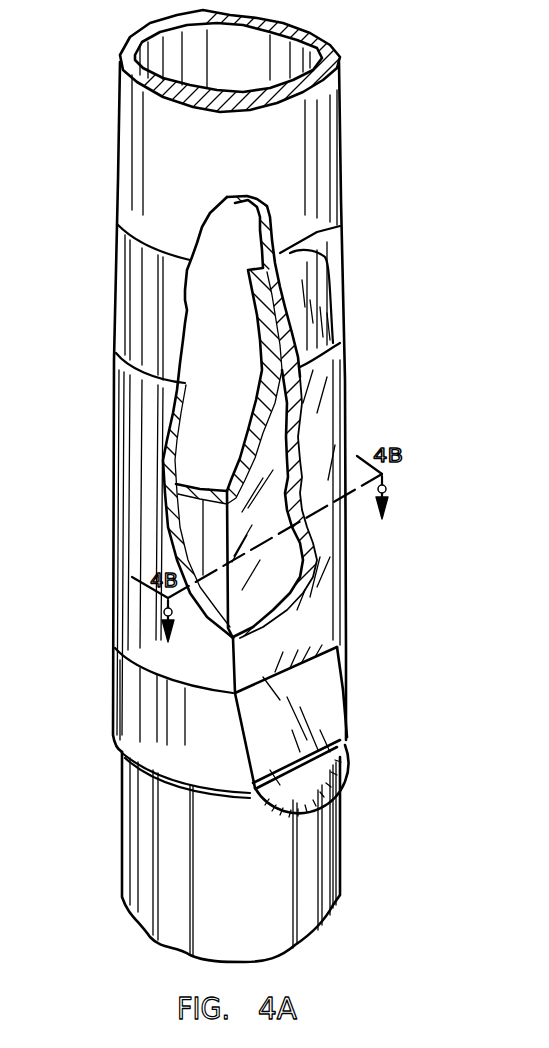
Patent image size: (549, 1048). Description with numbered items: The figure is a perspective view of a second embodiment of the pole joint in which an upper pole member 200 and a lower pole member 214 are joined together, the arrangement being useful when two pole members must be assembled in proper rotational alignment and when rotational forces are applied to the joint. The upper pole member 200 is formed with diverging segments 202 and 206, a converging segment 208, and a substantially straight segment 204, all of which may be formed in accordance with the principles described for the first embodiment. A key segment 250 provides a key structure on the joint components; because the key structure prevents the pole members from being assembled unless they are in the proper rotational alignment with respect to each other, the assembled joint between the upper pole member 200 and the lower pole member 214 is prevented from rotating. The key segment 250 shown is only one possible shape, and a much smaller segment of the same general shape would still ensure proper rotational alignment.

The upper pole member 200 is at (290, 138).
The diverging segment 202 is at (350, 330).
The substantially straight segment 204 is at (352, 332).
The diverging segment 206 is at (107, 632).
The converging segment 208 is at (242, 270).
The lower pole member 214 is at (310, 850).
The key segment 250 is at (333, 642).